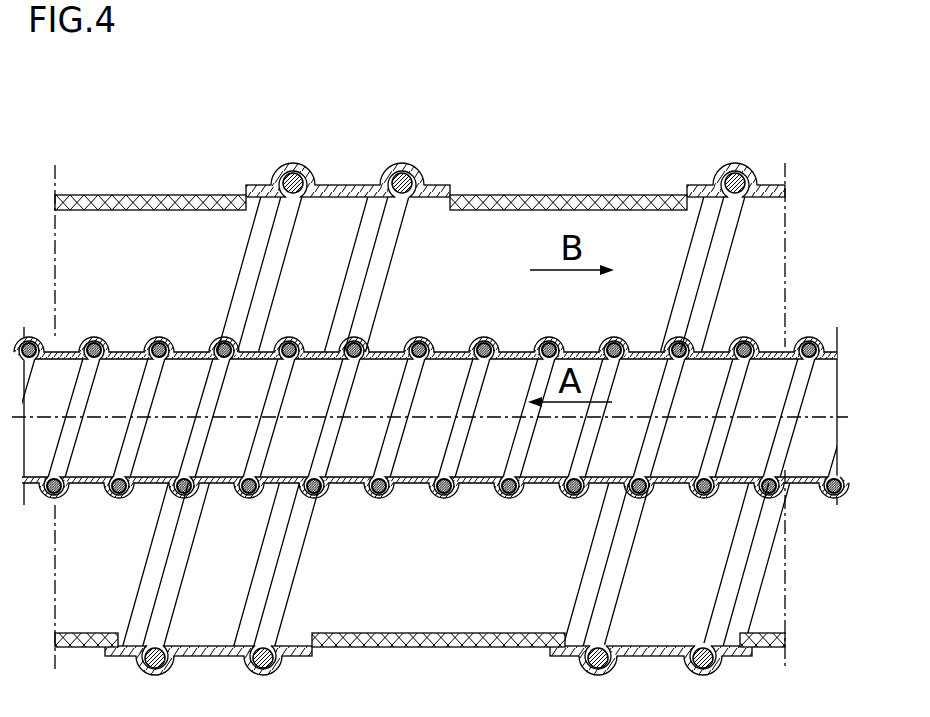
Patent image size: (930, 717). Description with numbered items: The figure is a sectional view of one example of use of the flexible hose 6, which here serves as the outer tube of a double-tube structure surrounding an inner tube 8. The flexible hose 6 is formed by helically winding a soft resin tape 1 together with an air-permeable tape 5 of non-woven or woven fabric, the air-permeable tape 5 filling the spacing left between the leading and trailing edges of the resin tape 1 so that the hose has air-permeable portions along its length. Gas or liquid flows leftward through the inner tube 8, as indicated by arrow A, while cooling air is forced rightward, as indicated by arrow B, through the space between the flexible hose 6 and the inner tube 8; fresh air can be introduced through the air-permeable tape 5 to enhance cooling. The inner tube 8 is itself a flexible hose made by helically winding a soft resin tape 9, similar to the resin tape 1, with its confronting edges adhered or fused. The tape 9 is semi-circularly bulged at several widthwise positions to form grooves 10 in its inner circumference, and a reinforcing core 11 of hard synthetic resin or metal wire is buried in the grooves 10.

The soft resin tape 1 is at (362, 188).
The air-permeable tape 5 is at (160, 197).
The flexible hose 6 is at (418, 140).
The inner tube 8 is at (812, 318).
The soft resin tape 9 is at (150, 479).
The grooves 10 is at (322, 478).
The reinforcing core 11 is at (310, 482).